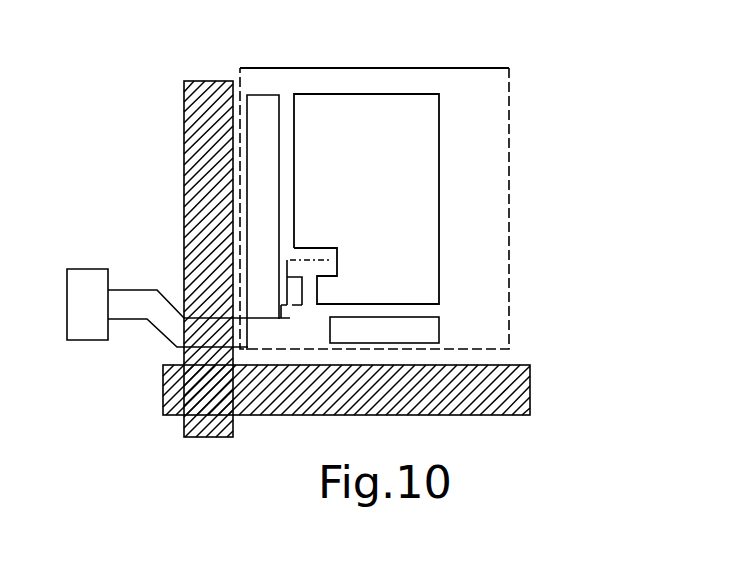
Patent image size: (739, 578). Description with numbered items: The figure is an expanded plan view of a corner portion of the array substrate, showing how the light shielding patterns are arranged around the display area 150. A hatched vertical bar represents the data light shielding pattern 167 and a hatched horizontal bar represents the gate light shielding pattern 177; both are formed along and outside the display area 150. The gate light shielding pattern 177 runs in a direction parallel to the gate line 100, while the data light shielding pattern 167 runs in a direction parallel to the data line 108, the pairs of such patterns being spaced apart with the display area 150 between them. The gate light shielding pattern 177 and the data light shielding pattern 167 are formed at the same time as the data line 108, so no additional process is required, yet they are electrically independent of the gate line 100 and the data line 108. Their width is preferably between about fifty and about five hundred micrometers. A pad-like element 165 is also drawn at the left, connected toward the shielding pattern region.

The gate line 100 is at (440, 329).
The data line 108 is at (263, 100).
The display area 150 is at (405, 68).
The gate pad 165 is at (89, 280).
The data light shielding pattern 167 is at (203, 82).
The gate light shielding pattern 177 is at (537, 387).